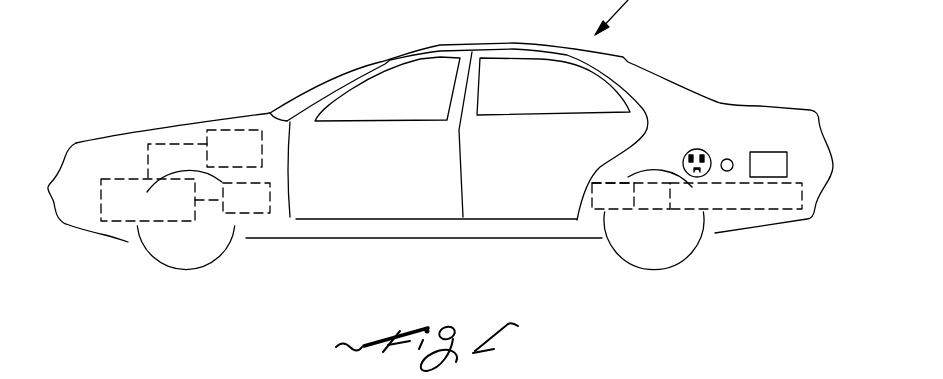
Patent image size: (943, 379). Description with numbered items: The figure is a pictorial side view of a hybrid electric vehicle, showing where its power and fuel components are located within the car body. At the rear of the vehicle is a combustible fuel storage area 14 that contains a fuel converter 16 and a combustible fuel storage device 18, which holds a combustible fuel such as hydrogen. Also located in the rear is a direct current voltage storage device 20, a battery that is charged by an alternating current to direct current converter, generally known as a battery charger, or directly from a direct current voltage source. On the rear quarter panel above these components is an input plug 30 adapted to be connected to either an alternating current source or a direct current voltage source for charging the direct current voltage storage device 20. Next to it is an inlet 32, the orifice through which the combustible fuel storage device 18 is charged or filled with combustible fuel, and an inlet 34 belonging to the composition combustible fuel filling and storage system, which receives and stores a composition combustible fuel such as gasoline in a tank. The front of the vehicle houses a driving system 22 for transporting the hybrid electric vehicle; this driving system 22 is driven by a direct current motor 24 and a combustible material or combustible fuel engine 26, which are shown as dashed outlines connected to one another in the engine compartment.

The combustible fuel storage area 14 is at (620, 174).
The fuel converter 16 is at (613, 200).
The combustible fuel storage device 18 is at (653, 207).
The direct current voltage storage device 20 is at (760, 210).
The driving system 22 is at (130, 222).
The direct current motor 24 is at (237, 128).
The combustible fuel engine 26 is at (263, 215).
The input plug 30 is at (704, 152).
The inlet 32 is at (730, 159).
The inlet 34 is at (772, 152).